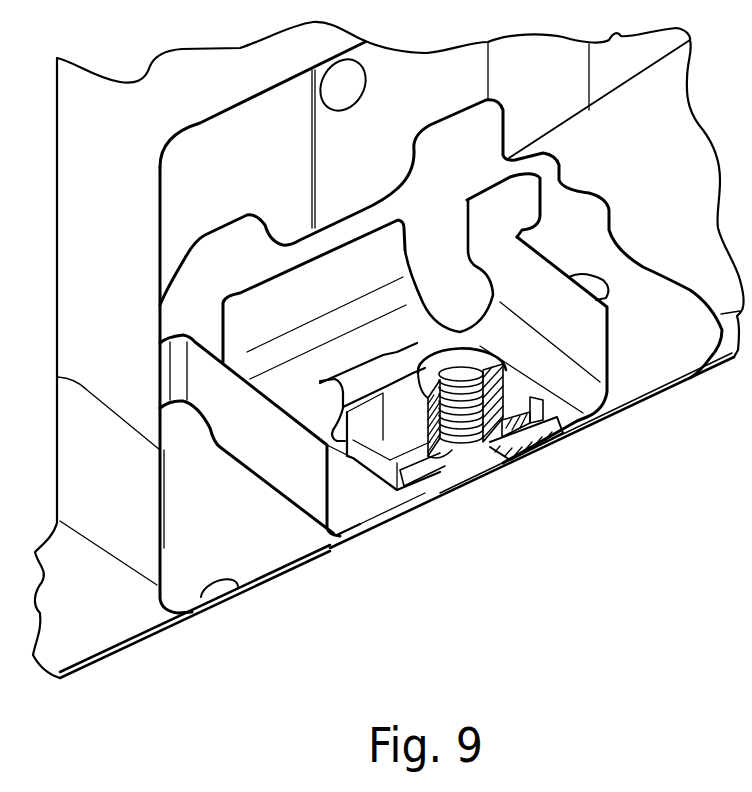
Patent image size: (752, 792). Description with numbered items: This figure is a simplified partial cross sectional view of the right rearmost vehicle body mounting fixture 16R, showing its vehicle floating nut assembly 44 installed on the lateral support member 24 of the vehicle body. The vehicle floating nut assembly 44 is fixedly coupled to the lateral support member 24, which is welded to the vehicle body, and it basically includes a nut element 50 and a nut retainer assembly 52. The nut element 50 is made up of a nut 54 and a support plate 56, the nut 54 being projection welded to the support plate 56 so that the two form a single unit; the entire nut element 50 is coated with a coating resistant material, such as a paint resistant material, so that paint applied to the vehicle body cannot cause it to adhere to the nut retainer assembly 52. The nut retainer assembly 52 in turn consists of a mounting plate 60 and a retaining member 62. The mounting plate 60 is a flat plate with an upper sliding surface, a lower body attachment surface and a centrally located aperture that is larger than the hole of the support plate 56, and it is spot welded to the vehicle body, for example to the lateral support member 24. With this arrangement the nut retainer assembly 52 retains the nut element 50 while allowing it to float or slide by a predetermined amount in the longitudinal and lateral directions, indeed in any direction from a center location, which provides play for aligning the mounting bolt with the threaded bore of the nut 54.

The vehicle body mounting fixture 16R is at (541, 486).
The lateral support member 24 is at (212, 560).
The vehicle floating nut assembly 44 is at (540, 352).
The nut element 50 is at (490, 340).
The nut retainer assembly 52 is at (349, 500).
The nut 54 is at (433, 347).
The support plate 56 is at (423, 497).
The mounting plate 60 is at (300, 412).
The retaining member 62 is at (383, 517).